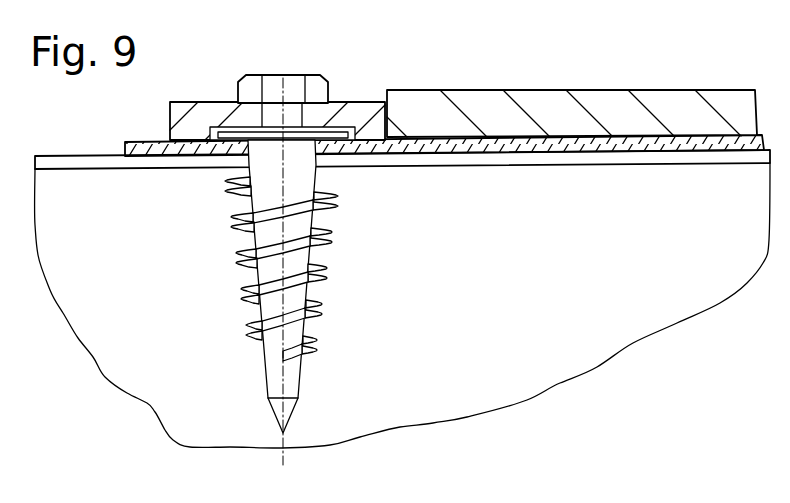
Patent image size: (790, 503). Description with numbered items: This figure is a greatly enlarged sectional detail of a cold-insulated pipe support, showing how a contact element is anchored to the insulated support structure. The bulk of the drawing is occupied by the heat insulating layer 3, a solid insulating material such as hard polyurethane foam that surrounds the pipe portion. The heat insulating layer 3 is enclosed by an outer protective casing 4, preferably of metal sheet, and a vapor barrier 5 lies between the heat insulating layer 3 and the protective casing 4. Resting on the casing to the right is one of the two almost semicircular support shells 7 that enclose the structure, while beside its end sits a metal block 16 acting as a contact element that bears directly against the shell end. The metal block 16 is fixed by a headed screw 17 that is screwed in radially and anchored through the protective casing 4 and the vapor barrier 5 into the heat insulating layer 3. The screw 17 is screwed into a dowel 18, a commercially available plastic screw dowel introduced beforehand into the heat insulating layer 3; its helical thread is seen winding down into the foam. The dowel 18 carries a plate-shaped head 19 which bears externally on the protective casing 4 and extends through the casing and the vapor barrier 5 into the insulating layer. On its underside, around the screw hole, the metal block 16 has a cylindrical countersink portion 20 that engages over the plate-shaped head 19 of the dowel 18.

The heat insulating layer 3 is at (412, 268).
The protective casing 4 is at (663, 138).
The vapor barrier 5 is at (617, 160).
The support shell 7 is at (605, 113).
The metal block 16 is at (198, 120).
The headed screw 17 is at (290, 92).
The dowel 18 is at (265, 235).
The plate-shaped head 19 is at (340, 122).
The cylindrical countersink portion 20 is at (210, 129).